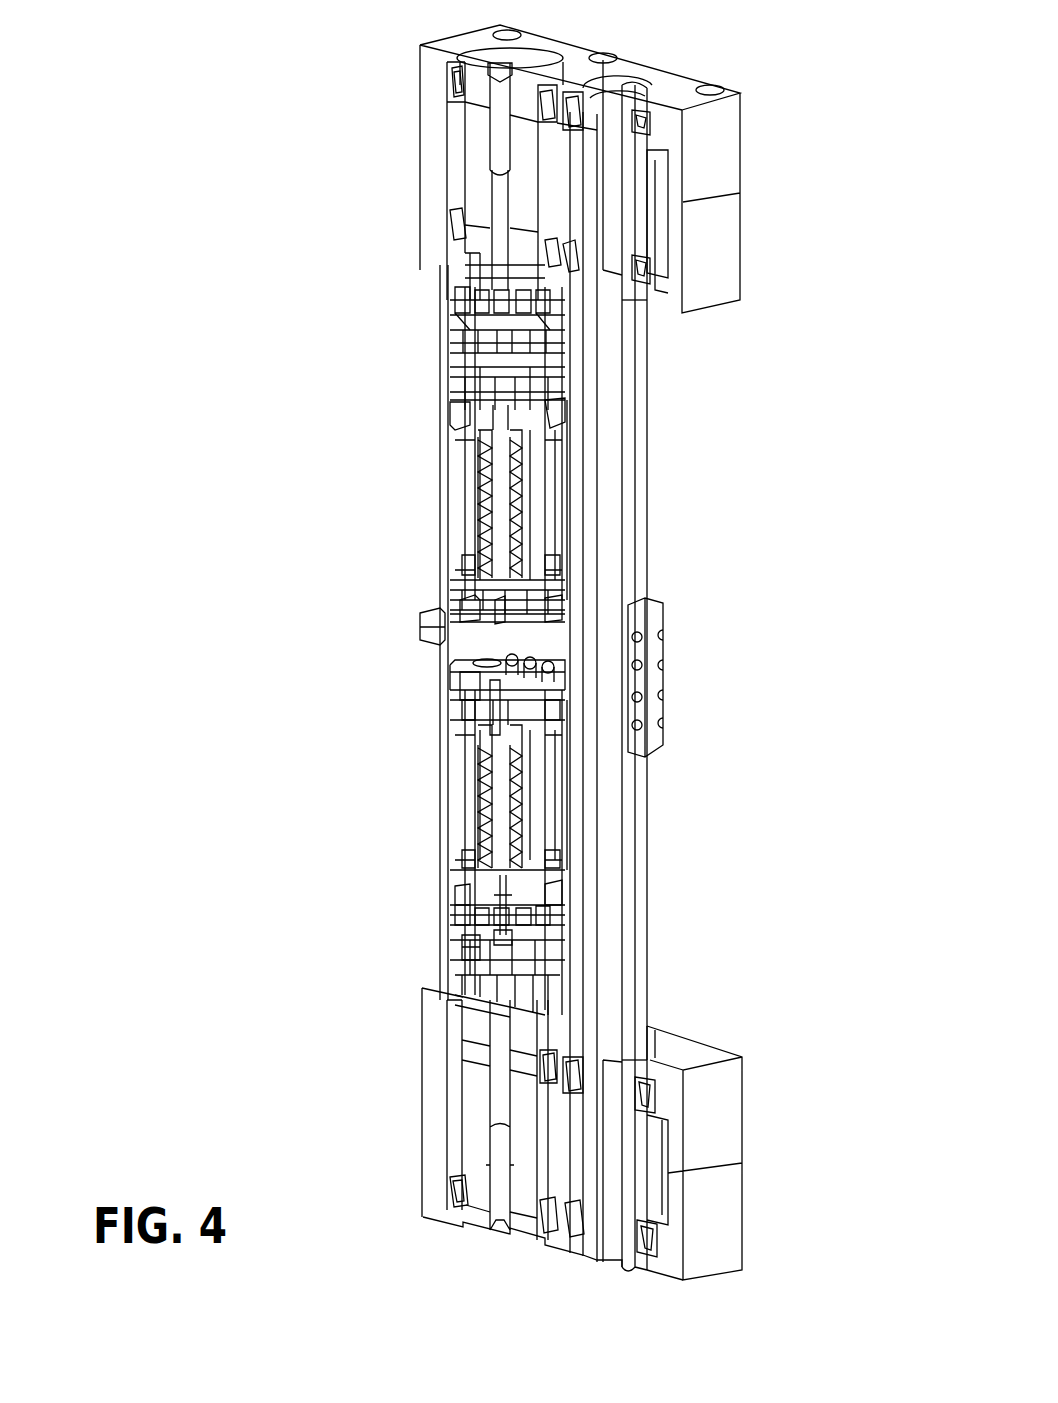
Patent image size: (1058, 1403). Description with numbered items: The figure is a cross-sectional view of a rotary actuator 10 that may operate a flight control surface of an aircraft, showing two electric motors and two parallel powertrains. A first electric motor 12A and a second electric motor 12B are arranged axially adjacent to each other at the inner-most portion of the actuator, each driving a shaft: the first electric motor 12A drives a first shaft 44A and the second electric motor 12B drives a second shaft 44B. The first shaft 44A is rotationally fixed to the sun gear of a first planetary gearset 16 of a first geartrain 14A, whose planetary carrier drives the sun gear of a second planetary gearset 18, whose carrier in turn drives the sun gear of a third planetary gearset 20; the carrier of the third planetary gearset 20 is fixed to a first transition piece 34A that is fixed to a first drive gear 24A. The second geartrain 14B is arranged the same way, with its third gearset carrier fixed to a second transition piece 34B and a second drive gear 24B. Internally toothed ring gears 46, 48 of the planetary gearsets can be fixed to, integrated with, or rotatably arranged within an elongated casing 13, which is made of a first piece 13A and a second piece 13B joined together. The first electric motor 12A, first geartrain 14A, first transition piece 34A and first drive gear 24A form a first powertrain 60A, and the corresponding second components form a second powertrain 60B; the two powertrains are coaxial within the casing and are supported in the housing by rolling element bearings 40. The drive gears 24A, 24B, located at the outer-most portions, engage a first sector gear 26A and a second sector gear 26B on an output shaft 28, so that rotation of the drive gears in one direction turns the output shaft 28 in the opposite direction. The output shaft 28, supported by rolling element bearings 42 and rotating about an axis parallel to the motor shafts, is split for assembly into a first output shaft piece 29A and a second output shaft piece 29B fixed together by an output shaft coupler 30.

The rotary actuator 10 is at (197, 862).
The first electric motor 12A is at (460, 808).
The second electric motor 12B is at (462, 450).
The elongated casing 13 is at (507, 618).
The first piece 13A is at (447, 668).
The second piece 13B is at (440, 610).
The first geartrain 14A is at (527, 972).
The second geartrain 14B is at (417, 268).
The first planetary gearset 16 is at (547, 387).
The second planetary gearset 18 is at (535, 357).
The third planetary gearset 20 is at (540, 322).
The first drive gear 24A is at (478, 1137).
The second drive gear 24B is at (478, 173).
The first sector gear 26A is at (657, 1152).
The second sector gear 26B is at (652, 222).
The output shaft 28 is at (634, 676).
The first output shaft piece 29A is at (630, 878).
The second output shaft piece 29B is at (630, 527).
The output shaft coupler 30 is at (640, 678).
The first transition piece 34A is at (470, 1078).
The second transition piece 34B is at (478, 252).
The rolling element bearings 40 is at (455, 80).
The rolling element bearings 42 is at (653, 275).
The first shaft 44A is at (500, 745).
The second shaft 44B is at (500, 495).
The internally toothed ring gear 46 is at (553, 923).
The internally toothed ring gear 48 is at (470, 940).
The first powertrain 60A is at (318, 680).
The second powertrain 60B is at (318, 92).